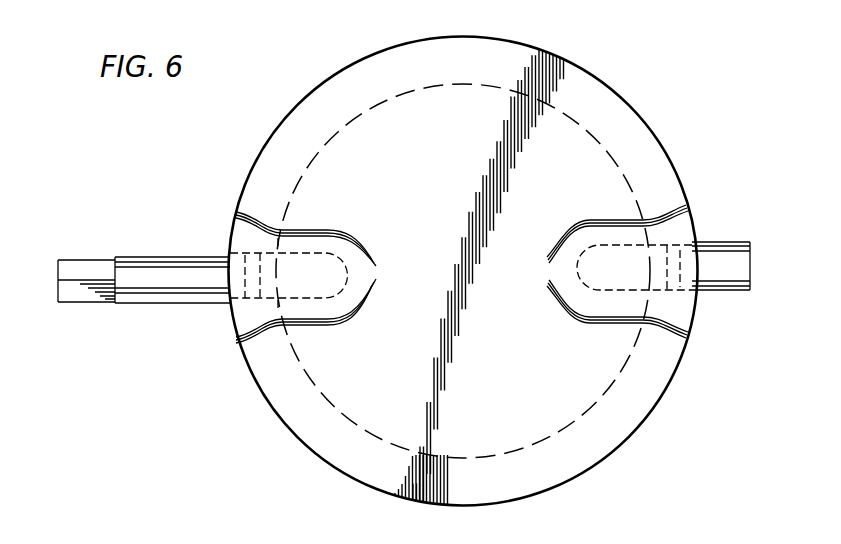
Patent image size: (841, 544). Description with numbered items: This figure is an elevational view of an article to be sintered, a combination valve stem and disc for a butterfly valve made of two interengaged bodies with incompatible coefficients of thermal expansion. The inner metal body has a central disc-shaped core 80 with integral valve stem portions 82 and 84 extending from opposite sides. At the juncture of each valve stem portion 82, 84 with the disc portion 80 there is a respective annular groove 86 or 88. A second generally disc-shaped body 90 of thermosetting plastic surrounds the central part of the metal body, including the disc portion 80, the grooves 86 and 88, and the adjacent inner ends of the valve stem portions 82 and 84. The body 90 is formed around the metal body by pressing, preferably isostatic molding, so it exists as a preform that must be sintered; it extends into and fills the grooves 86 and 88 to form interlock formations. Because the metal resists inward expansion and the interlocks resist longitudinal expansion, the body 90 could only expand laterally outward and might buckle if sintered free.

The central disc-shaped core 80 is at (571, 130).
The valve stem portion 82 is at (730, 240).
The valve stem portion 84 is at (157, 256).
The annular groove 86 is at (672, 288).
The annular groove 88 is at (256, 298).
The second generally disc-shaped body 90 is at (600, 438).